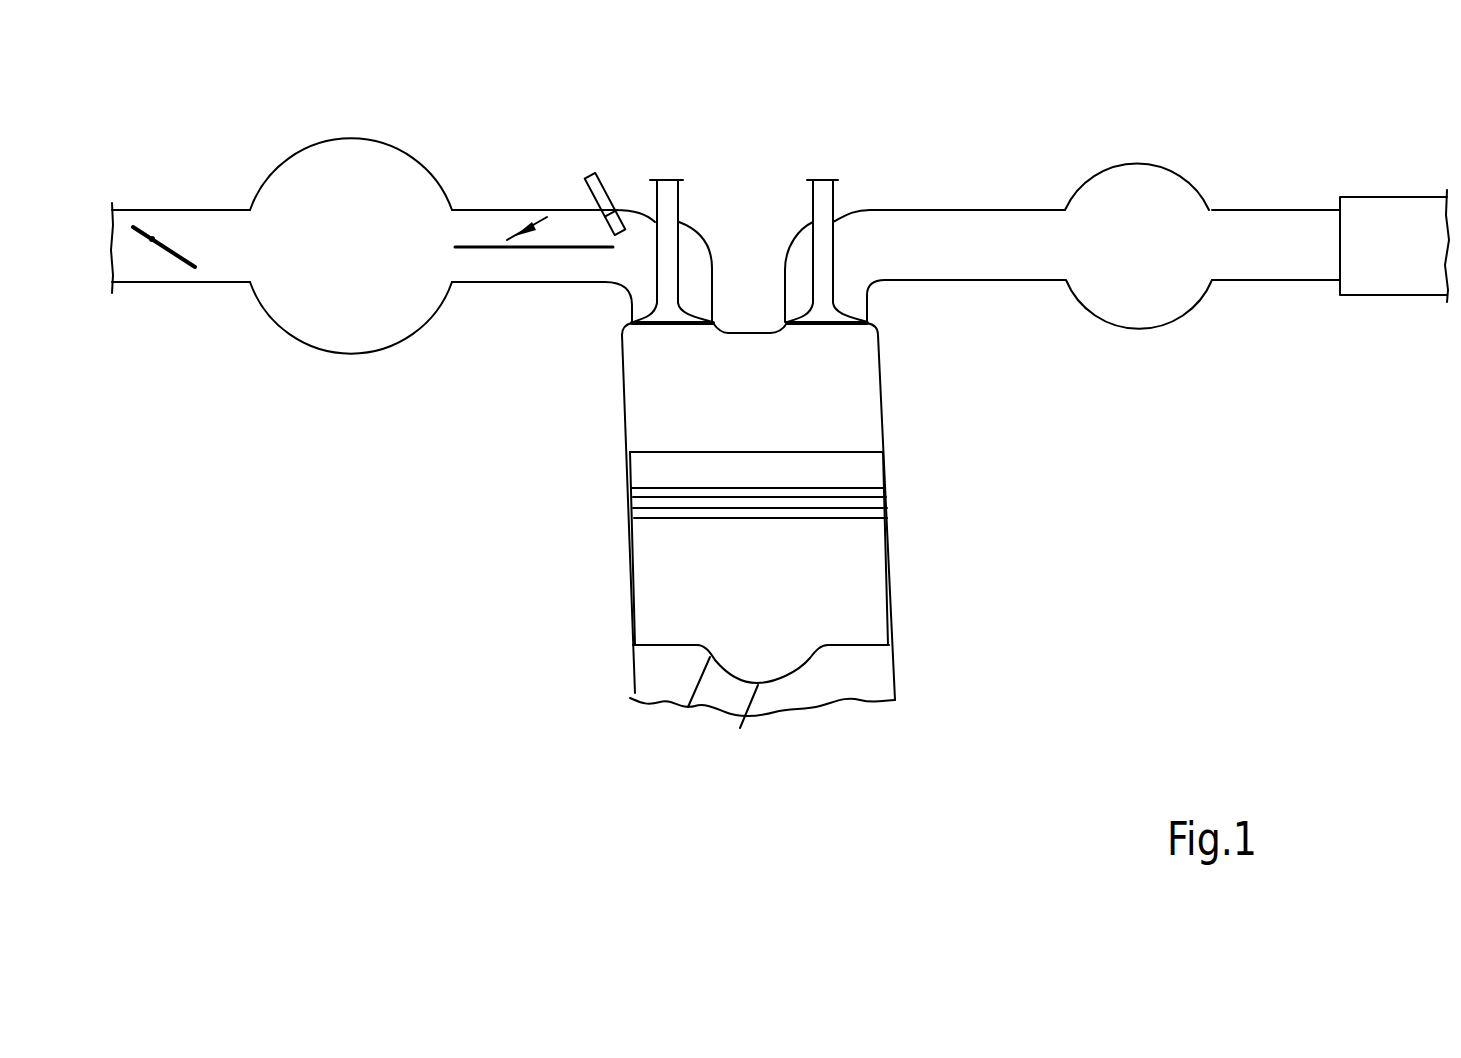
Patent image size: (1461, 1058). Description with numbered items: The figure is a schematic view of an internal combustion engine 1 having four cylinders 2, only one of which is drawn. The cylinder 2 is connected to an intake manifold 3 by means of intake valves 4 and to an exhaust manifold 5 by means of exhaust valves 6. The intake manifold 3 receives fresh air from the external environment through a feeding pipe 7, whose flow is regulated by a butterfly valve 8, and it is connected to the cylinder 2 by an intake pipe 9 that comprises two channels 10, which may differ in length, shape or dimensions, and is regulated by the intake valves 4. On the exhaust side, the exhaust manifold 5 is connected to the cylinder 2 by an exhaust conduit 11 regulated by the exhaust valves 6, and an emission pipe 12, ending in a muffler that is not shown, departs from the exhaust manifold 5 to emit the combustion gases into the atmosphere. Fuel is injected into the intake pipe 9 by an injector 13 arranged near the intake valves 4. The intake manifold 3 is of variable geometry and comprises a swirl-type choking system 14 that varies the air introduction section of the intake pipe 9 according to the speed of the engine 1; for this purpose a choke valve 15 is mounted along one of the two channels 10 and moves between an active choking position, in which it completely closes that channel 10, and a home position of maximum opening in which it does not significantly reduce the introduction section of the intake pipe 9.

The internal combustion engine 1 is at (418, 558).
The cylinder 2 is at (848, 392).
The intake manifold 3 is at (326, 378).
The intake valve 4 is at (675, 213).
The exhaust manifold 5 is at (1165, 308).
The exhaust valve 6 is at (817, 222).
The feeding pipe 7 is at (226, 270).
The butterfly valve 8 is at (152, 234).
The intake pipe 9 is at (553, 312).
The channel 10 is at (485, 224).
The exhaust conduit 11 is at (987, 265).
The emission pipe 12 is at (1367, 208).
The injector 13 is at (599, 188).
The choking system 14 is at (505, 108).
The choke valve 15 is at (524, 226).